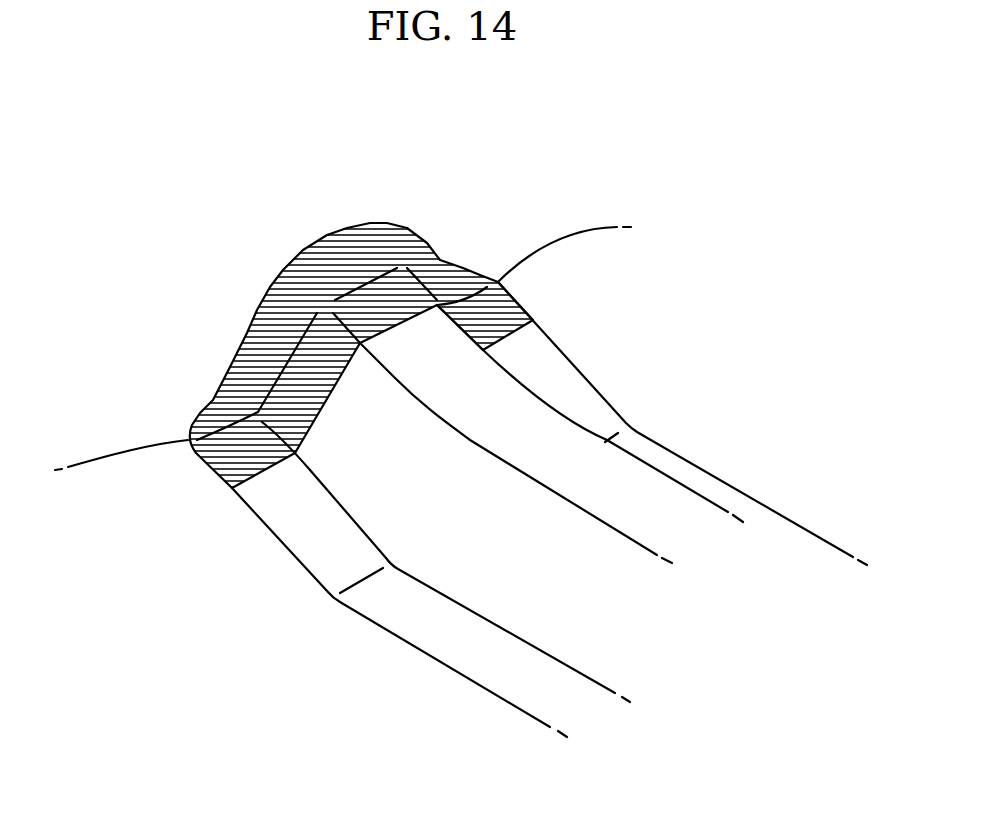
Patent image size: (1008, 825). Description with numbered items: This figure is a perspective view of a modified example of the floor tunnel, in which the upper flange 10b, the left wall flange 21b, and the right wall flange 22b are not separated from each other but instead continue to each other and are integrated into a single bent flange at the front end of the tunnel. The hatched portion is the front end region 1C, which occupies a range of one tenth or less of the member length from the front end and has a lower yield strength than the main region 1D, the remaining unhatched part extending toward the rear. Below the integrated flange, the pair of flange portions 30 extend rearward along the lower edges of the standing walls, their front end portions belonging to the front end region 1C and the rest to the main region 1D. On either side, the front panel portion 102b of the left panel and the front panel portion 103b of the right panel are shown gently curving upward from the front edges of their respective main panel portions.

The upper flange 10b is at (343, 257).
The front end region 1C is at (317, 357).
The left wall flange 21b is at (250, 350).
The right wall flange 22b is at (432, 265).
The front panel portion 103b is at (580, 255).
The front panel portion 102b is at (127, 480).
The main region 1D is at (525, 605).
The flange portions 30 is at (575, 383).